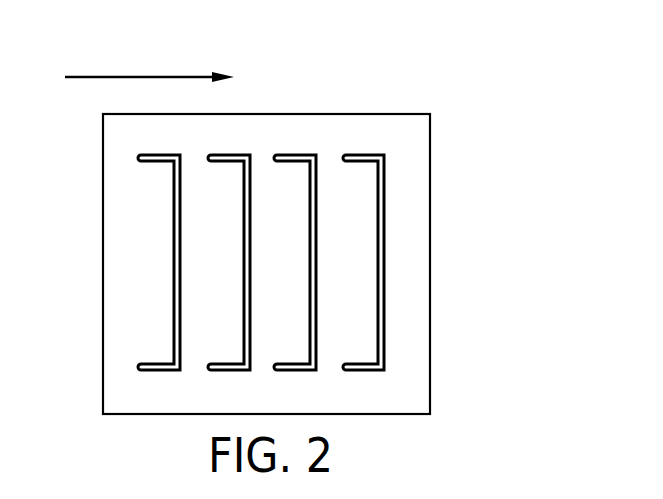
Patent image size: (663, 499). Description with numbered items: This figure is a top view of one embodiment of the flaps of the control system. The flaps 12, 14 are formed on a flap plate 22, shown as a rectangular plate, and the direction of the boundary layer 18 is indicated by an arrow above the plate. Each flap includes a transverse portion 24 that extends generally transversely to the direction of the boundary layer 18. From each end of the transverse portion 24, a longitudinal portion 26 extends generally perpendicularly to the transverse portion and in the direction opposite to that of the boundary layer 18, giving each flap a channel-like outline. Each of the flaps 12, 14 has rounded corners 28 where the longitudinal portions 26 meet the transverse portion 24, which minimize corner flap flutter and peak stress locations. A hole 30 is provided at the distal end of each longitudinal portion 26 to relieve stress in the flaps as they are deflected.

The flap 12 is at (418, 238).
The flap 14 is at (418, 238).
The boundary layer 18 is at (133, 77).
The flap plate 22 is at (410, 125).
The transverse portion 24 is at (243, 228).
The longitudinal portion 26 is at (220, 156).
The rounded corner 28 is at (171, 165).
The hole 30 is at (134, 157).